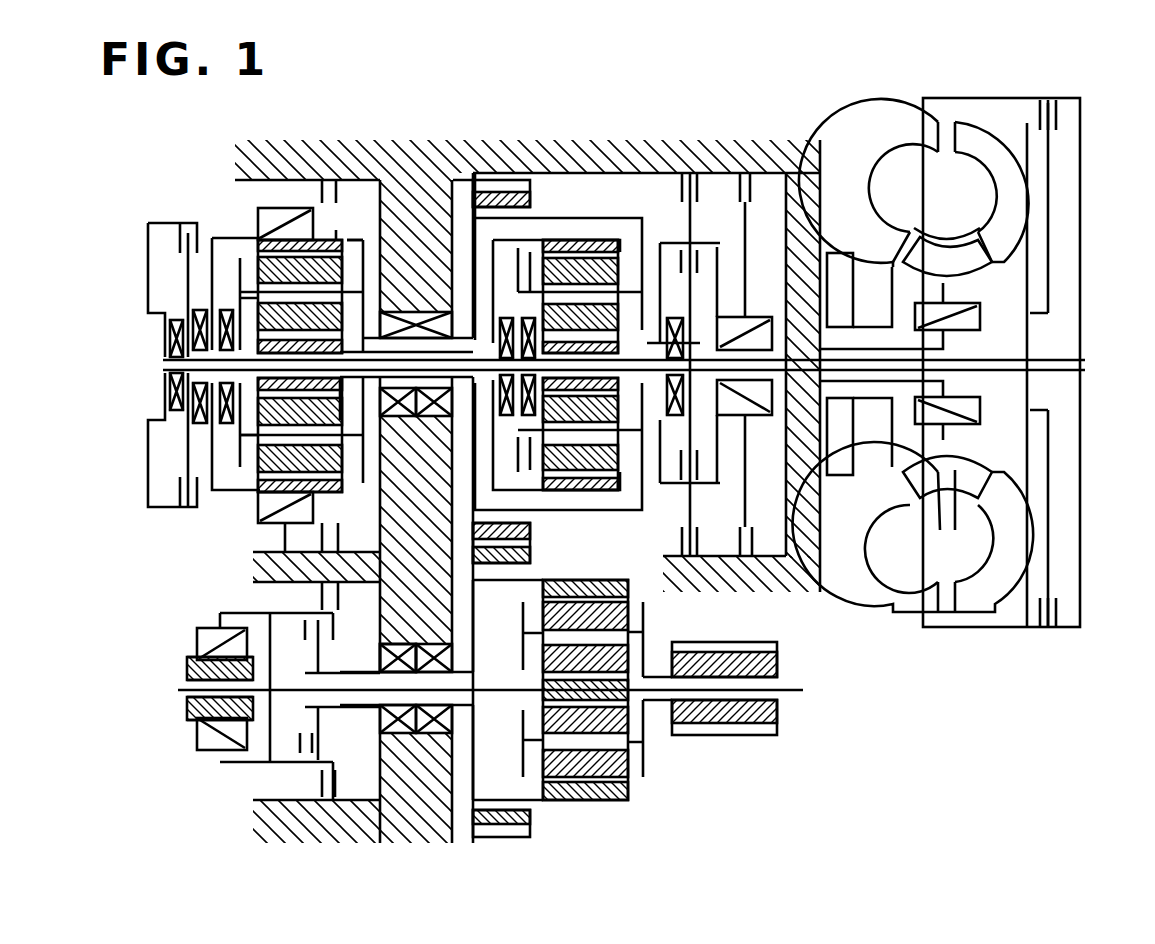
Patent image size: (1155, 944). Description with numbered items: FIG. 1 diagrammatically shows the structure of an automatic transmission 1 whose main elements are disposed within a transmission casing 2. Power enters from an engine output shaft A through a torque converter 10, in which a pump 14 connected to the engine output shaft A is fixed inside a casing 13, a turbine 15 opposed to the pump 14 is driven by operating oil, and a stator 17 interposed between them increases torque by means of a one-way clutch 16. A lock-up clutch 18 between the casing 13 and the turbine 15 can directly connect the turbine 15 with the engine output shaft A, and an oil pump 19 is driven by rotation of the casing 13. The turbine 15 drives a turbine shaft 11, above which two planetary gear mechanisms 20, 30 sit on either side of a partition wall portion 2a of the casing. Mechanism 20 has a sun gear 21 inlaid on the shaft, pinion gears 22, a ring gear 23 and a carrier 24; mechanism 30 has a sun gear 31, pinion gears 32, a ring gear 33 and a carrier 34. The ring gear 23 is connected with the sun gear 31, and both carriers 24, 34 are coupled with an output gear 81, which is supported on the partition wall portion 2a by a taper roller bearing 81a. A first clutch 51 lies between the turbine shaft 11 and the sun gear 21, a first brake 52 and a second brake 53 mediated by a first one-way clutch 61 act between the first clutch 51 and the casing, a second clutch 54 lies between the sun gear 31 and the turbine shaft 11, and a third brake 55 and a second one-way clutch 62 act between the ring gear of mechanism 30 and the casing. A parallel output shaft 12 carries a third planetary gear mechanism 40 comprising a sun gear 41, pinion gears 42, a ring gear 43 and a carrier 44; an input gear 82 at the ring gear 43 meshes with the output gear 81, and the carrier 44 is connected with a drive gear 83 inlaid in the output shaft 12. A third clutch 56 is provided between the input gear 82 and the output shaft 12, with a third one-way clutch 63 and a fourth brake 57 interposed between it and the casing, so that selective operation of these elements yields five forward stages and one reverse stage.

The transmission housing 1 is at (278, 144).
The transmission casing 2 is at (522, 170).
The partition wall portion 2a is at (404, 185).
The torque converter 10 is at (905, 118).
The turbine shaft 11 is at (1000, 378).
The output shaft 12 is at (800, 690).
The casing 13 is at (1000, 98).
The pump 14 is at (905, 175).
The turbine 15 is at (1002, 188).
The one-way clutch 16 is at (970, 330).
The stator 17 is at (955, 262).
The lock-up clutch 18 is at (1060, 113).
The oil pump 19 is at (836, 468).
The planetary gear mechanism 20 is at (624, 205).
The sun gear 21 is at (570, 310).
The pinion gears 22 is at (585, 218).
The ring gear 23 is at (555, 492).
The carrier 24 is at (655, 250).
The planetary gear mechanism 30 is at (355, 202).
The sun gear 31 is at (292, 340).
The pinion gears 32 is at (338, 180).
The ring gear 33 is at (262, 520).
The carrier 34 is at (362, 222).
The planetary gear mechanism 40 is at (607, 803).
The sun gear 41 is at (605, 665).
The pinion gears 42 is at (628, 783).
The ring gear 43 is at (660, 575).
The carrier 44 is at (645, 715).
The first clutch 51 is at (700, 265).
The first brake 52 is at (730, 178).
The second brake 53 is at (755, 178).
The second clutch 54 is at (177, 241).
The third brake 55 is at (290, 552).
The third clutch 56 is at (318, 640).
The fourth brake 57 is at (330, 600).
The first one-way clutch 61 is at (760, 320).
The second one-way clutch 62 is at (268, 220).
The third one-way clutch 63 is at (197, 640).
The output gear 81 is at (502, 180).
The taper roller bearing 81a is at (418, 250).
The input gear 82 is at (530, 832).
The drive gear 83 is at (760, 652).
The engine output shaft A is at (1098, 360).